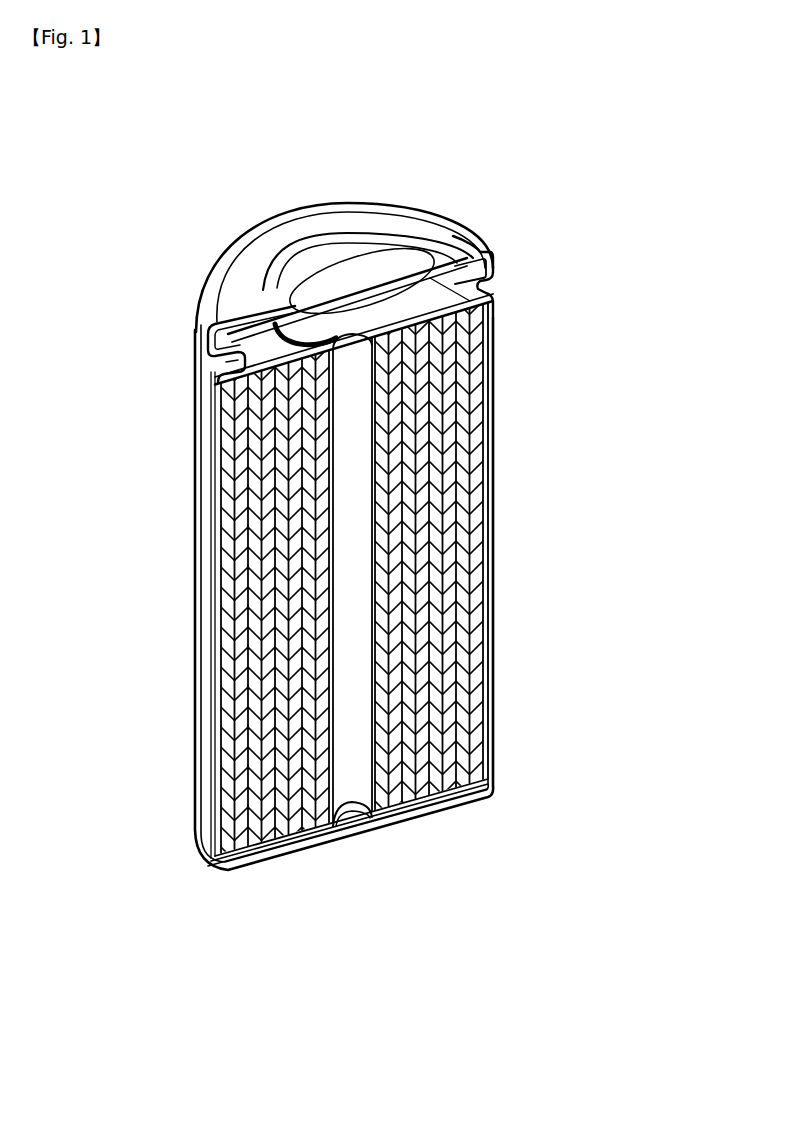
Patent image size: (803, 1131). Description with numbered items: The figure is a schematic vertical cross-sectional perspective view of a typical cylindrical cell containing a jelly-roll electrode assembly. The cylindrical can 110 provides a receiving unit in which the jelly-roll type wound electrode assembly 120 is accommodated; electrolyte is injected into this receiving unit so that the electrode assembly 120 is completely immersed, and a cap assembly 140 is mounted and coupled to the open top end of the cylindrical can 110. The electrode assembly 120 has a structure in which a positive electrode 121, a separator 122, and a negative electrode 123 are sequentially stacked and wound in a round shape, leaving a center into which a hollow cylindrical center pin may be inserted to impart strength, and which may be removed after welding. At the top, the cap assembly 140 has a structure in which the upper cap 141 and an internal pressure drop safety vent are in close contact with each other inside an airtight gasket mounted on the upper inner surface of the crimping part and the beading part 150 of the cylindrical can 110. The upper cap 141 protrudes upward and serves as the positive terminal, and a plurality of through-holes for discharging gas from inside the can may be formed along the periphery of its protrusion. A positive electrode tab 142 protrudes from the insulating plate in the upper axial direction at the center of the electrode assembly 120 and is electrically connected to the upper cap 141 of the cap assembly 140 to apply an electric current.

The cylindrical can 110 is at (493, 460).
The electrode assembly 120 is at (640, 897).
The positive electrode 121 is at (494, 797).
The separator 122 is at (452, 800).
The negative electrode 123 is at (416, 815).
The cap assembly 140 is at (505, 245).
The upper cap 141 is at (340, 268).
The positive electrode tab 142 is at (227, 320).
The beading part 150 is at (207, 362).